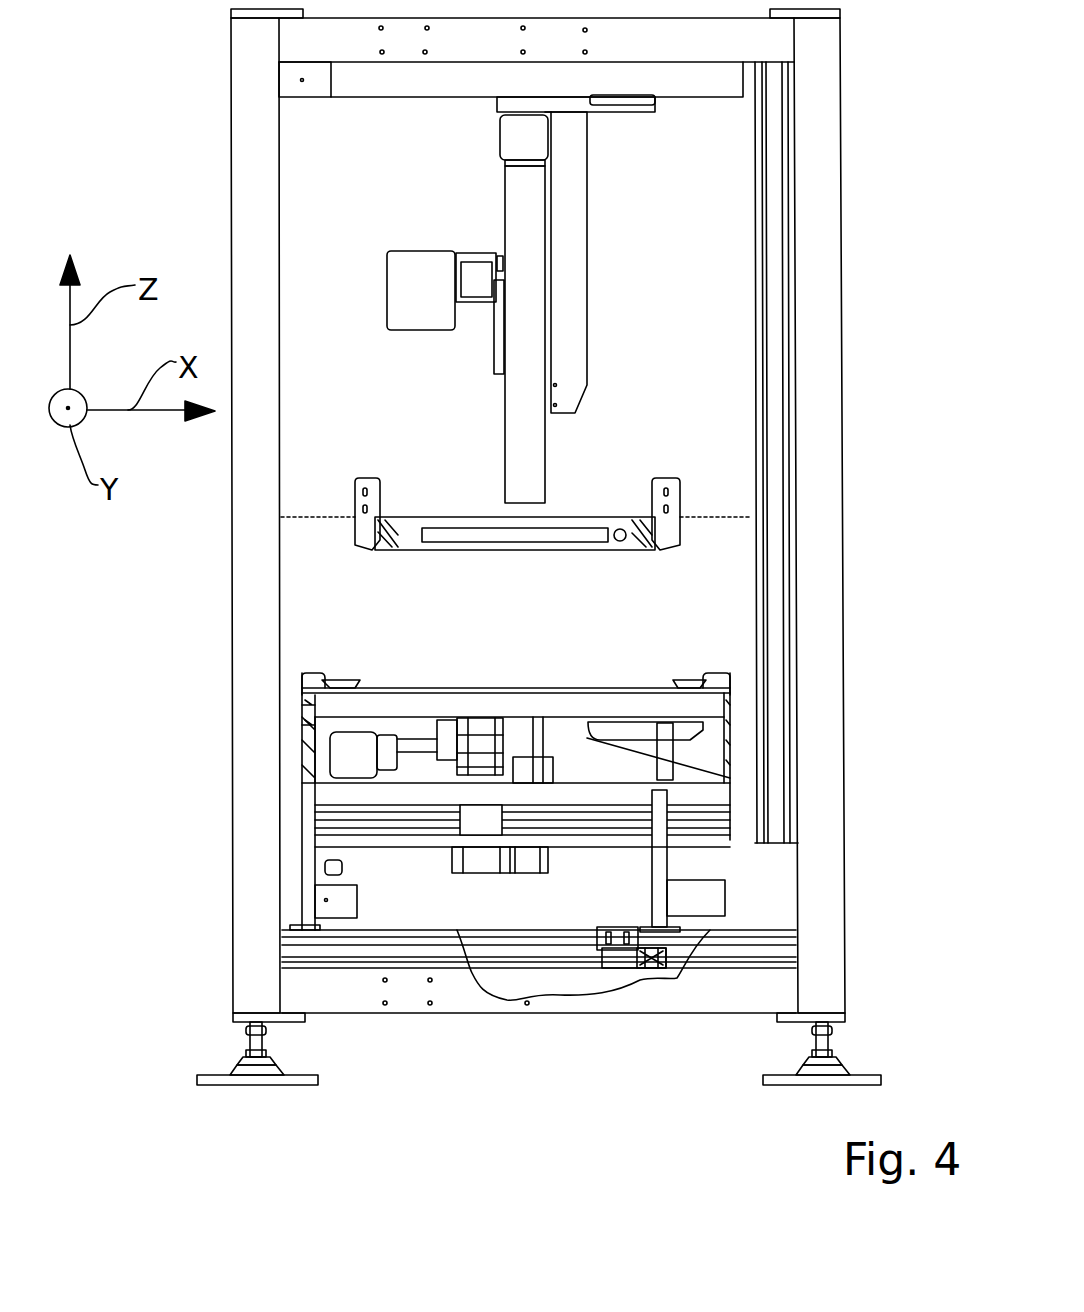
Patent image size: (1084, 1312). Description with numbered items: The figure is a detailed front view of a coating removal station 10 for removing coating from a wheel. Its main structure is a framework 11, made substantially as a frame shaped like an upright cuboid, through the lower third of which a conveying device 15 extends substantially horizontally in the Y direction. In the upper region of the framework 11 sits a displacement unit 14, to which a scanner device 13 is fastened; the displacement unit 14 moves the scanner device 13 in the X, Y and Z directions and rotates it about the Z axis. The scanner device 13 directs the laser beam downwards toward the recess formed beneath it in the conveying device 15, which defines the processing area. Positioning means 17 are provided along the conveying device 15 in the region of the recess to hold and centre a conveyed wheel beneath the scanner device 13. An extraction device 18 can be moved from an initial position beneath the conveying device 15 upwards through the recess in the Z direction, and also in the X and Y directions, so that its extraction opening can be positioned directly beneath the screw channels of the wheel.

The coating removal station 10 is at (205, 72).
The framework 11 is at (803, 205).
The scanner device 13 is at (415, 278).
The displacement unit 14 is at (655, 182).
The conveying device 15 is at (667, 702).
The positioning means 17 is at (328, 678).
The extraction device 18 is at (457, 750).